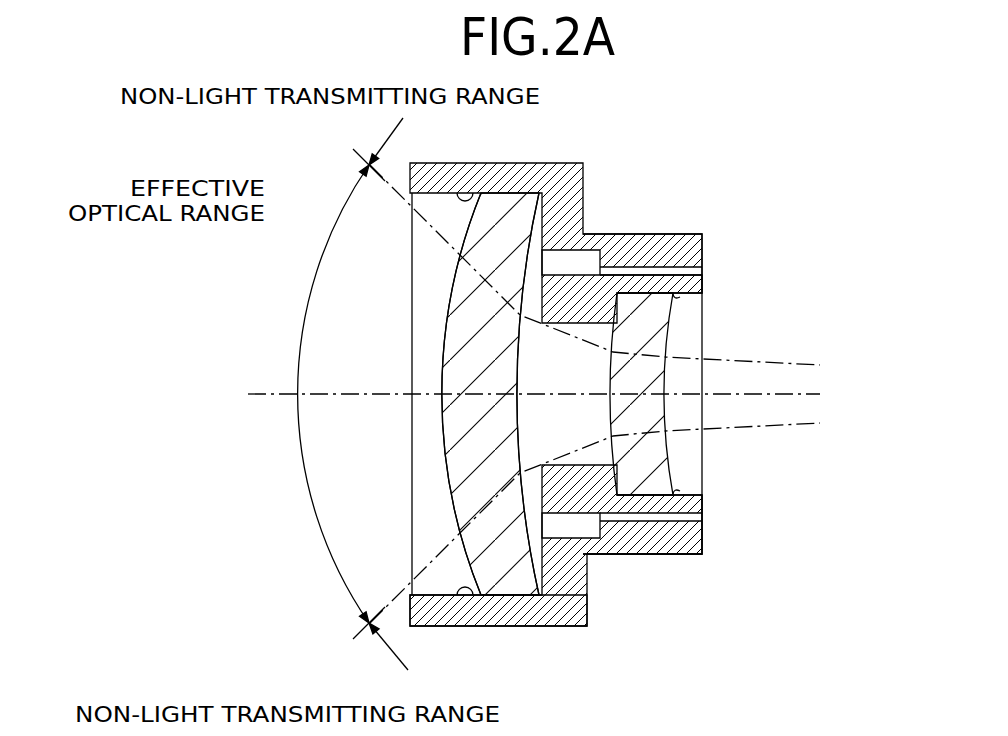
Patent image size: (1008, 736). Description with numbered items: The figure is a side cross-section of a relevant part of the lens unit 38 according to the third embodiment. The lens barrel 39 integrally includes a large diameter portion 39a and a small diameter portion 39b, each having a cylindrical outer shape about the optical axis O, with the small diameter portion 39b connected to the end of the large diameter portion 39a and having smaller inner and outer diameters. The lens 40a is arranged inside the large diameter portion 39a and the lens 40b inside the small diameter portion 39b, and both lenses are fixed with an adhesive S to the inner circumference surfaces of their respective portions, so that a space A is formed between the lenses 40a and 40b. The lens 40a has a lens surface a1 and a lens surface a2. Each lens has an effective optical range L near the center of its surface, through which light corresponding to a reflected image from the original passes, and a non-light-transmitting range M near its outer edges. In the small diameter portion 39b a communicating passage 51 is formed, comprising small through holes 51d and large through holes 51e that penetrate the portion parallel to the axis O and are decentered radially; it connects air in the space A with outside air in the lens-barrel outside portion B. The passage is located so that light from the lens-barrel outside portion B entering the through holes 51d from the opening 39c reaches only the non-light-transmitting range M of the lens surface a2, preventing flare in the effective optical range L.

The lens unit 38 is at (760, 167).
The lens barrel 39 is at (604, 412).
The large diameter portion 39a is at (487, 627).
The small diameter portion 39b is at (690, 553).
The opening 39c is at (698, 296).
The lens 40a is at (443, 375).
The lens 40b is at (627, 386).
The communicating passage 51 is at (662, 390).
The small through holes 51d is at (690, 270).
The large through holes 51e is at (556, 260).
The lens surface a1 is at (448, 501).
The lens surface a2 is at (522, 423).
The adhesive S is at (460, 192).
The space A is at (572, 378).
The lens-barrel outside portion B is at (732, 281).
The optical axis O is at (280, 393).
The effective optical range L is at (326, 250).
The non-light-transmitting range M is at (386, 141).